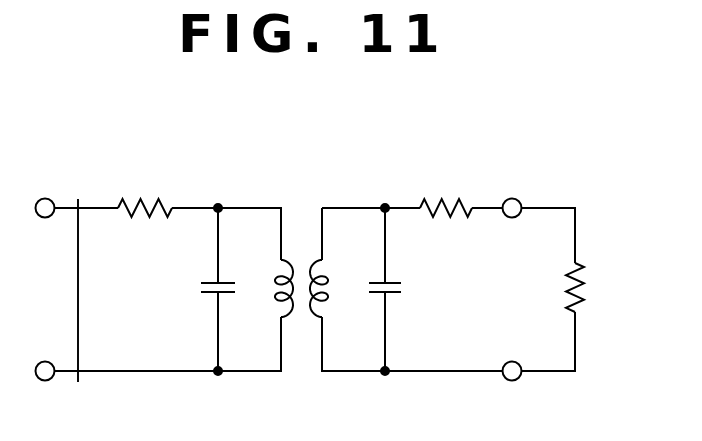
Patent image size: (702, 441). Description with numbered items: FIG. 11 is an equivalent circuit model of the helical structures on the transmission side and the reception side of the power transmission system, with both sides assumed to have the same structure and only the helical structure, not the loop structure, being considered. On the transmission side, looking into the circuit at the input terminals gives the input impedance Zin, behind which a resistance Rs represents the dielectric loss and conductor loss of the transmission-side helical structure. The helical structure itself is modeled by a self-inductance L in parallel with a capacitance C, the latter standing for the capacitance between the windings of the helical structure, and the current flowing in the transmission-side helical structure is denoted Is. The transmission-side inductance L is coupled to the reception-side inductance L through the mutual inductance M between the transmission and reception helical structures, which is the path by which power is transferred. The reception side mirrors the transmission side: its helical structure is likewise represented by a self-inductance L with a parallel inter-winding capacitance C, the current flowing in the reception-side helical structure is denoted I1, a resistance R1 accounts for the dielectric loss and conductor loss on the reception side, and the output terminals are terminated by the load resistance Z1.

The input impedance Zin is at (100, 192).
The resistance corresponding to dielectric loss and conductor loss on the transmissi Rs is at (145, 190).
The current flowing in the helical structure on the transmission side Is is at (258, 192).
The capacitance between windings in the helical structure C is at (299, 289).
The self-inductance of the helical structure L is at (301, 284).
The mutual inductance between the transmission/reception helical structures M is at (316, 200).
The current flowing in the helical structure on the reception side I1 is at (383, 187).
The resistance corresponding to dielectric loss and conductor loss on the reception R1 is at (446, 190).
The load resistance Z1 is at (590, 287).